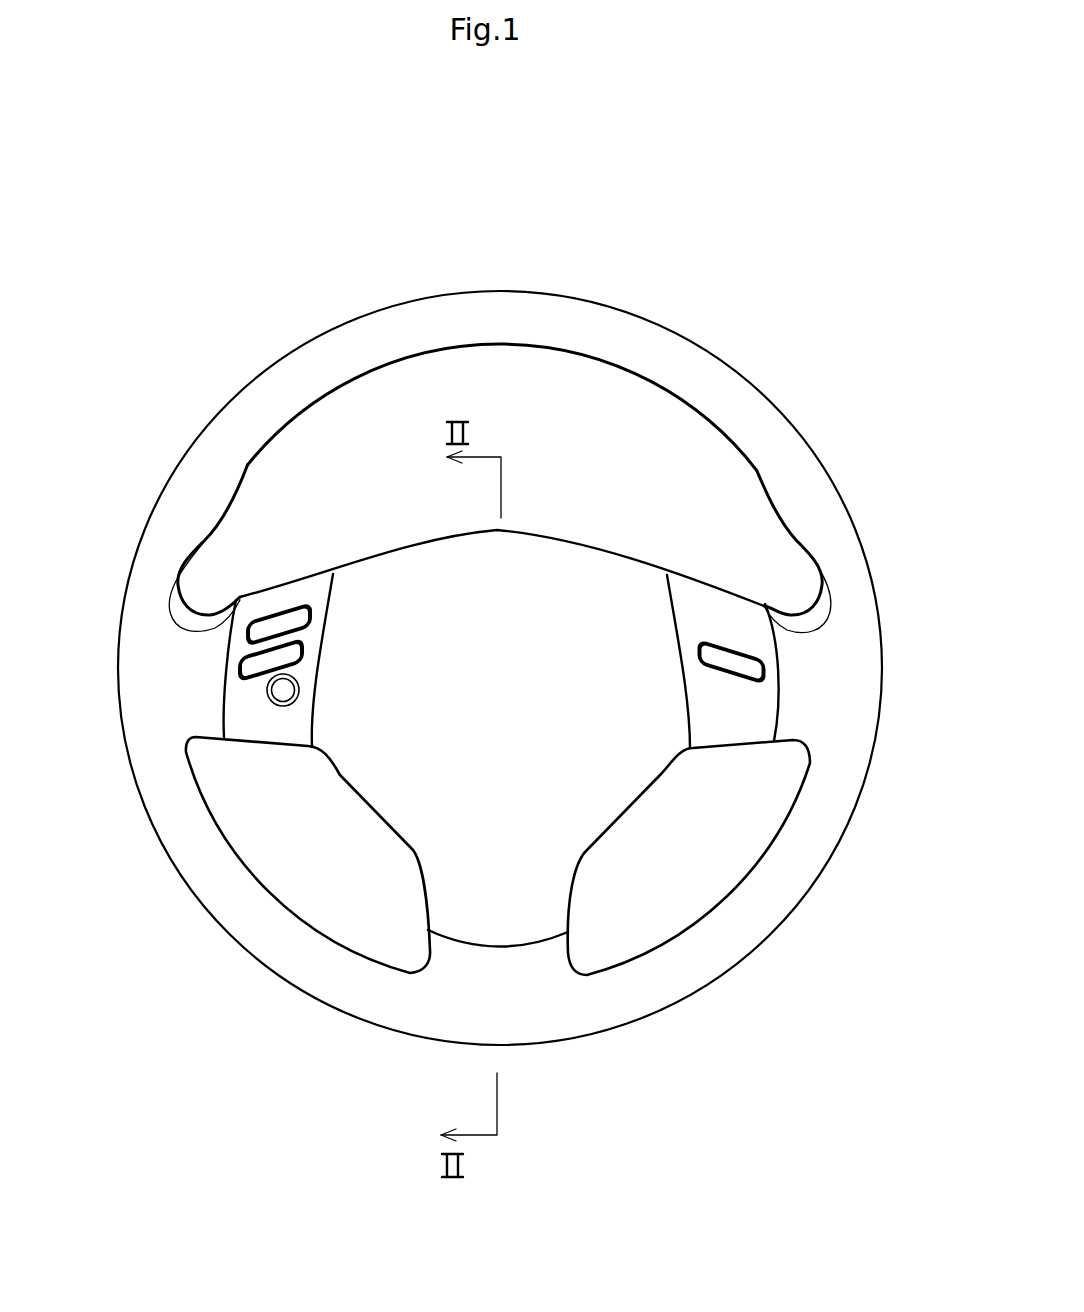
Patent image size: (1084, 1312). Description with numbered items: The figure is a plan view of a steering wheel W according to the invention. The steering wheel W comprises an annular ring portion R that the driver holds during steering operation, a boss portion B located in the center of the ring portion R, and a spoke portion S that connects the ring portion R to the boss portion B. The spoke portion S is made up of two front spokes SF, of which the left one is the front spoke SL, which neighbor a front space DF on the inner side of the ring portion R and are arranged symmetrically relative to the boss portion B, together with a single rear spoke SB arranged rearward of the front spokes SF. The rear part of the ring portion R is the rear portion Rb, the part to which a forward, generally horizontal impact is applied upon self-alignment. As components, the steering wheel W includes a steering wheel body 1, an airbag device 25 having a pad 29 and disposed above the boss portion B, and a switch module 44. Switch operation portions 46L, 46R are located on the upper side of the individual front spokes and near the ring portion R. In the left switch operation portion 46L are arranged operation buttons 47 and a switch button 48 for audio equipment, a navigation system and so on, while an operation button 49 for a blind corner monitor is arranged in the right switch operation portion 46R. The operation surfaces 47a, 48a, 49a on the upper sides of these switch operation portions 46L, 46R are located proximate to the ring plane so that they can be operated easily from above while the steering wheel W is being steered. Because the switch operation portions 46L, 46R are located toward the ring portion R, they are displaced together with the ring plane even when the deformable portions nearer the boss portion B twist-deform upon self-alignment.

The steering wheel W is at (507, 666).
The steering wheel body 1 is at (500, 691).
The ring portion R is at (292, 350).
The front space DF is at (498, 385).
The rear portion of the ring portion Rb is at (538, 1017).
The airbag device 25 is at (501, 568).
The pad 29 is at (649, 533).
The switch module 44 is at (727, 580).
The spoke portion S is at (507, 489).
The left front spoke SL is at (507, 489).
The front spokes SF is at (837, 437).
The rear spoke SB is at (583, 928).
The operation buttons 47 is at (365, 642).
The operation surface of operation buttons 47a is at (296, 652).
The switch button 48 is at (378, 686).
The operation surface of switch button 48a is at (283, 690).
The operation button of blind corner monitor 49 is at (648, 680).
The operation surface of blind corner monitor button 49a is at (720, 660).
The left switch operation portion 46L is at (308, 855).
The right switch operation portion 46R is at (689, 849).
The boss portion B is at (351, 831).